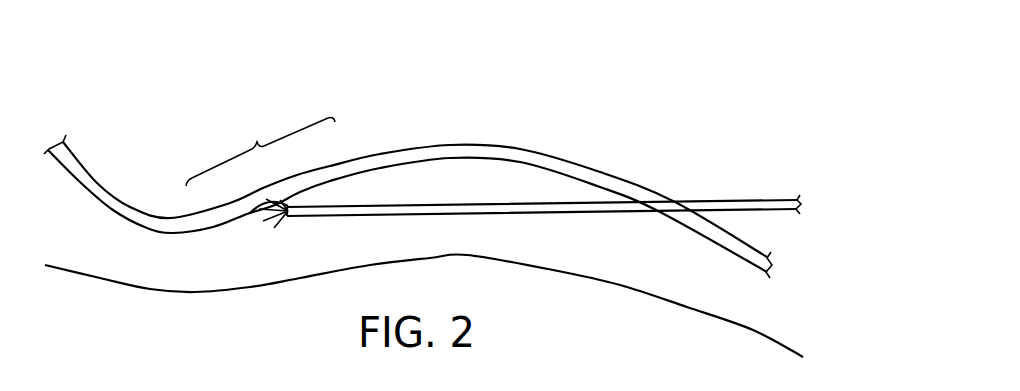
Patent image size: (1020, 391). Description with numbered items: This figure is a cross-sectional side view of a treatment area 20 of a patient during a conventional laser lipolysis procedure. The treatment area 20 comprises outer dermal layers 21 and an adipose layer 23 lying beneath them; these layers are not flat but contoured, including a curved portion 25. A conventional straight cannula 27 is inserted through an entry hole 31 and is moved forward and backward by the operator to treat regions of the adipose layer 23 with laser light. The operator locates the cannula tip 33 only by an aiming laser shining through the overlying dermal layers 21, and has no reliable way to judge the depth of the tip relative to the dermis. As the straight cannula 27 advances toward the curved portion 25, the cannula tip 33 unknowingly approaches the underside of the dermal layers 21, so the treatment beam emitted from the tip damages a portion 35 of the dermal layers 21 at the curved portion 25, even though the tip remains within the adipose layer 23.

The treatment area 20 is at (363, 55).
The dermal layers 21 is at (423, 148).
The adipose layer 23 is at (178, 270).
The curved portion 25 is at (257, 142).
The straight cannula 27 is at (505, 209).
The entry hole 31 is at (677, 202).
The cannula tip 33 is at (288, 216).
The damaged portion 35 is at (260, 196).